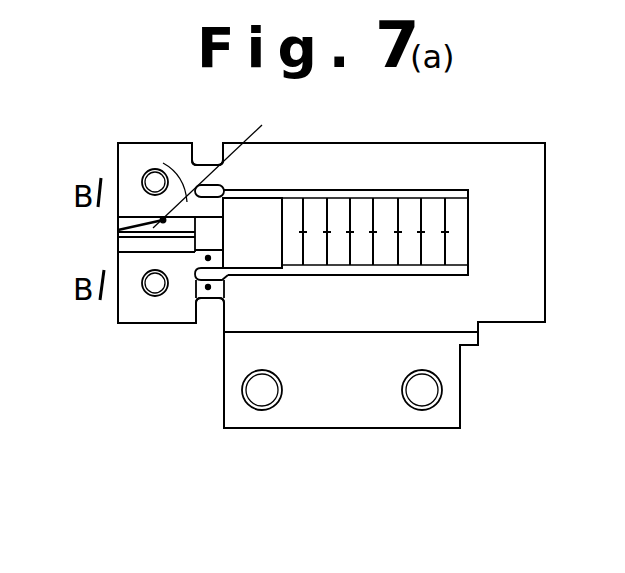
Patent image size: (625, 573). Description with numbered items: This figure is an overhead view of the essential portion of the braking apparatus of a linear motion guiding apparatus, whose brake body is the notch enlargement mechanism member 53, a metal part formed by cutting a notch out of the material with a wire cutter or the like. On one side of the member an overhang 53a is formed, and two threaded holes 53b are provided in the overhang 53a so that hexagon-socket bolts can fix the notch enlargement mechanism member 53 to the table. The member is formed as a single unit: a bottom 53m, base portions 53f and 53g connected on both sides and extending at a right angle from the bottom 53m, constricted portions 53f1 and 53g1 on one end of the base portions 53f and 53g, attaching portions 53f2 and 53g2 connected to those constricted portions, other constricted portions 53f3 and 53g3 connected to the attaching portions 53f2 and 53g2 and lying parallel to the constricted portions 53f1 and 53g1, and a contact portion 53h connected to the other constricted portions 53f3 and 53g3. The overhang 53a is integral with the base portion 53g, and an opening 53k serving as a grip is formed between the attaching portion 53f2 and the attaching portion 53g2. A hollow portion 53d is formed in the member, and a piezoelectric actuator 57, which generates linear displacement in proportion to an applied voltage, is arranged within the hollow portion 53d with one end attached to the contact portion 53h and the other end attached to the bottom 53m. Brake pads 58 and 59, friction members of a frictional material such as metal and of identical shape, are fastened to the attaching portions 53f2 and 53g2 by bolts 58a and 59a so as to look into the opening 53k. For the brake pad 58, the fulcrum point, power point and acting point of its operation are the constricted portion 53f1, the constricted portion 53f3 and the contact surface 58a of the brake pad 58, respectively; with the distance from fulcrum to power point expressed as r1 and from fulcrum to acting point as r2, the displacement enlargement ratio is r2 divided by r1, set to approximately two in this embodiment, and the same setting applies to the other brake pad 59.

The notch enlargement mechanism member 53 is at (470, 355).
The overhang 53a is at (343, 413).
The threaded holes 53b is at (254, 409).
The hollow portion 53d is at (376, 191).
The base portion 53f is at (337, 165).
The constricted portion 53f1 is at (207, 158).
The attaching portion 53f2 is at (130, 148).
The other constricted portion 53f3 is at (223, 157).
The base portion 53g is at (263, 313).
The constricted portion 53g1 is at (205, 300).
The attaching portion 53g2 is at (208, 260).
The other constricted portion 53g3 is at (208, 289).
The contact portion 53h is at (272, 238).
The opening 53k is at (195, 275).
The bottom 53m is at (543, 258).
The piezoelectric actuator 57 is at (437, 227).
The brake pad 58 is at (118, 230).
The bolt 58a is at (145, 186).
The brake pad 59 is at (118, 250).
The bolt 59a is at (148, 285).
The distance from fulcrum point to power point r1 is at (208, 207).
The distance from fulcrum point to acting point r2 is at (163, 163).